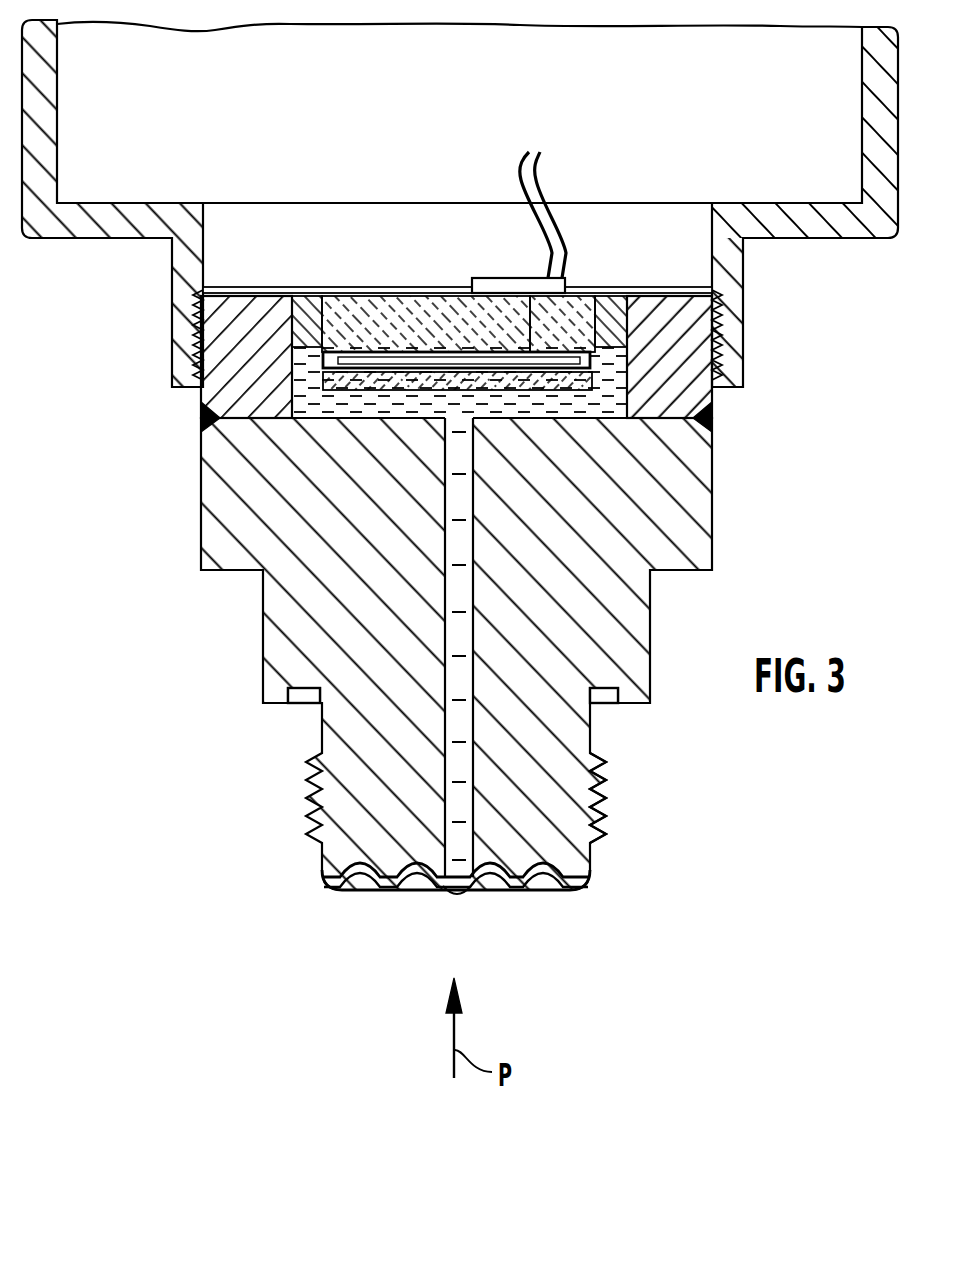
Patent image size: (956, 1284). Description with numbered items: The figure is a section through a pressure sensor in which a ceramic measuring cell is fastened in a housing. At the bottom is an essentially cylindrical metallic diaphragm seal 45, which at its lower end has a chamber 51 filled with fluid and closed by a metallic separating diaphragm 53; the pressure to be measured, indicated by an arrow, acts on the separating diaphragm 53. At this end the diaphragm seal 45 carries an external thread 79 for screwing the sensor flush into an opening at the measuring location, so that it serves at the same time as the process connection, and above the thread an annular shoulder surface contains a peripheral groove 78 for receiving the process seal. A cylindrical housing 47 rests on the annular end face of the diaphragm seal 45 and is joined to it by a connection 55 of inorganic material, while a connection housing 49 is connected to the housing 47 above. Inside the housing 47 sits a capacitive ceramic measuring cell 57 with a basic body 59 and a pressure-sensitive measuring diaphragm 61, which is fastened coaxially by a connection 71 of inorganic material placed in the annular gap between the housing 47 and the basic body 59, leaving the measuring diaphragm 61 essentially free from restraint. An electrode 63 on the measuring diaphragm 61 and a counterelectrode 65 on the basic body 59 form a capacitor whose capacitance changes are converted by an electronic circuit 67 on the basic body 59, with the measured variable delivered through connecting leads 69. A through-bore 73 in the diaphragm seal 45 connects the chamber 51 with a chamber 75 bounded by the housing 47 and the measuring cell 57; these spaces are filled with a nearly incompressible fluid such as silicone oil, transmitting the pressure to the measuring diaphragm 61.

The metallic diaphragm seal 45 is at (290, 658).
The housing 47 is at (693, 338).
The connection housing 49 is at (823, 232).
The chamber 51 is at (392, 888).
The metallic separating diaphragm 53 is at (580, 890).
The connection made of an inorganic material 55 is at (200, 412).
The ceramic measuring cell 57 is at (416, 316).
The basic body 59 is at (338, 314).
The measuring diaphragm 61 is at (577, 395).
The electrode 63 is at (412, 392).
The counterelectrode 65 is at (442, 350).
The electronic circuit 67 is at (512, 285).
The connecting leads 69 is at (521, 164).
The connection made of an inorganic material 71 is at (614, 310).
The through-bore 73 is at (460, 787).
The chamber 75 is at (342, 408).
The peripheral groove 78 is at (303, 700).
The external thread 79 is at (594, 826).